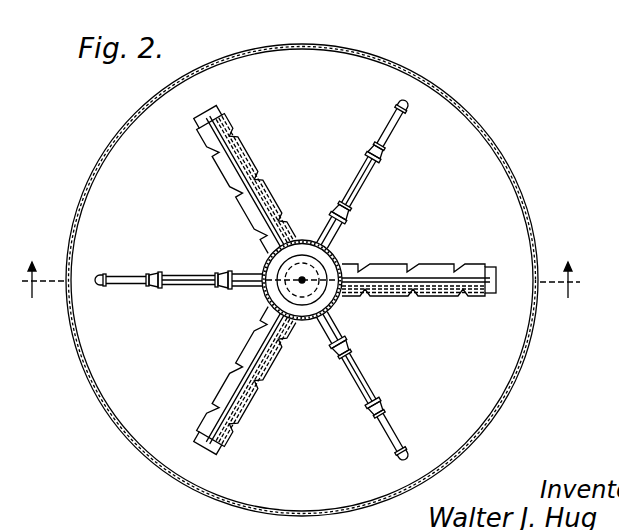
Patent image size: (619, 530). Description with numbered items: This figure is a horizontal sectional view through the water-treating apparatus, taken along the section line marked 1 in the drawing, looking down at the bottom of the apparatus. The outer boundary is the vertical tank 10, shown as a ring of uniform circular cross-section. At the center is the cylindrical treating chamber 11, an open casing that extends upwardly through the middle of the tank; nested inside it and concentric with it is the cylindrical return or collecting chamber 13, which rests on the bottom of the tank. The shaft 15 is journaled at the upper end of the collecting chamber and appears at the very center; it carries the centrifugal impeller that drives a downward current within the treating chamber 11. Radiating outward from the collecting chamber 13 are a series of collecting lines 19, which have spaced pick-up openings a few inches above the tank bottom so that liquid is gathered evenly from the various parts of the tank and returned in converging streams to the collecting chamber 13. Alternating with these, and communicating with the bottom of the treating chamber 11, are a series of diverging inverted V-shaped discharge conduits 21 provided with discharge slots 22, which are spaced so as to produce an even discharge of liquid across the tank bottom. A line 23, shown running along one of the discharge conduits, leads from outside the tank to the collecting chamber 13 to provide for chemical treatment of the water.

The section line 1- 1 is at (305, 280).
The vertical tank 10 is at (516, 172).
The cylindrical treating chamber 11 is at (337, 256).
The cylindrical return or collecting chamber 13 is at (278, 294).
The shaft 15 is at (303, 275).
The collecting lines 19 is at (186, 276).
The inverted V-shaped discharge conduits 21 is at (252, 157).
The discharge slots 22 is at (233, 137).
The line 23 is at (374, 279).